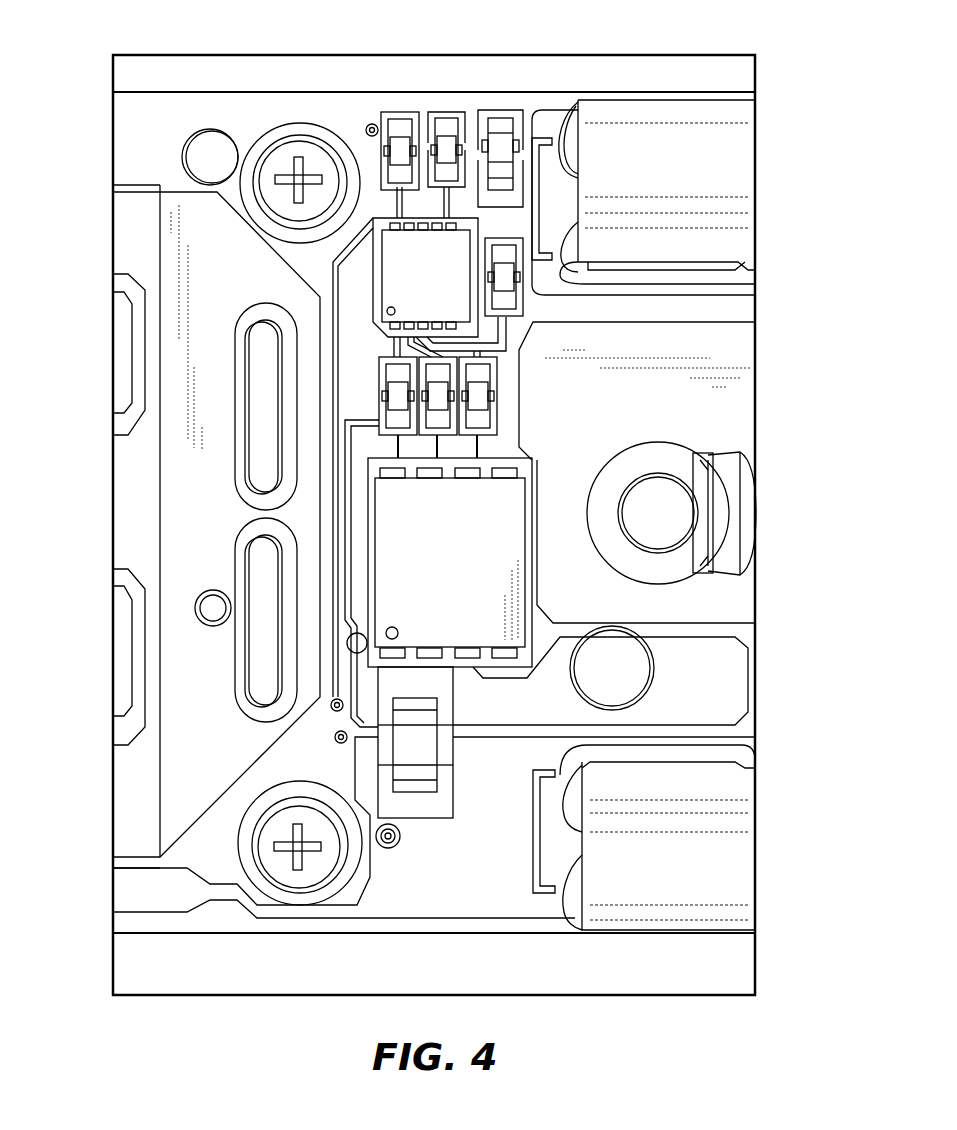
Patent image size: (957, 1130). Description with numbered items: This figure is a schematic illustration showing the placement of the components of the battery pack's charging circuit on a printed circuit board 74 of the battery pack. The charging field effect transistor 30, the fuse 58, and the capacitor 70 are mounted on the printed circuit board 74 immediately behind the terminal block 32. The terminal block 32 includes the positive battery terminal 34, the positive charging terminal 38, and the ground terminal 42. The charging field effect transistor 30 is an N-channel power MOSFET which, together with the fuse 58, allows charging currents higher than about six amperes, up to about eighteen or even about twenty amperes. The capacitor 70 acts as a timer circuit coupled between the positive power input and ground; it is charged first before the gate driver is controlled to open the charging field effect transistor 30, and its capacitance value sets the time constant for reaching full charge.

The capacitor 70 is at (503, 133).
The printed circuit board 74 is at (158, 135).
The ground terminal 42 is at (697, 167).
The terminal block 32 is at (845, 357).
The positive charging terminal 38 is at (725, 512).
The charging field effect transistor 30 is at (440, 568).
The fuse 58 is at (417, 758).
The positive battery terminal 34 is at (693, 875).